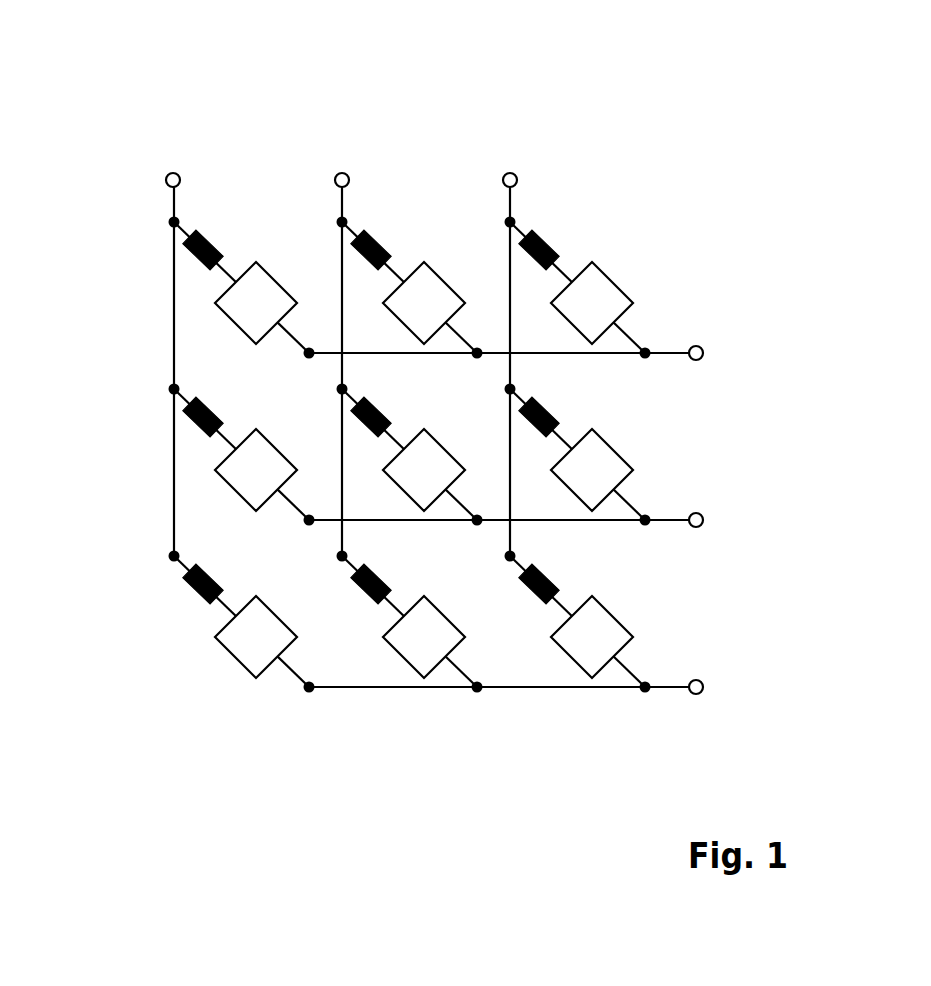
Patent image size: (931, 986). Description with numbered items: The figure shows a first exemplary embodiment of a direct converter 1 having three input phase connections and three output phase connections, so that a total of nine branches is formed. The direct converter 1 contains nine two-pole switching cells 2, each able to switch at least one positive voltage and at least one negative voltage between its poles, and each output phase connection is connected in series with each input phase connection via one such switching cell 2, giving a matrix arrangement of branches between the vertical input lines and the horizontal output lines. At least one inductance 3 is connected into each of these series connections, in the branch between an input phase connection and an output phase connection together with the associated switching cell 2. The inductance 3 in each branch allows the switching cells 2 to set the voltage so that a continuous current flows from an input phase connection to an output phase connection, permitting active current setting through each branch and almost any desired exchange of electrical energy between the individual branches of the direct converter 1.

The direct converter 1 is at (157, 118).
The two-pole switching cell 2 is at (454, 445).
The inductance 3 is at (454, 445).